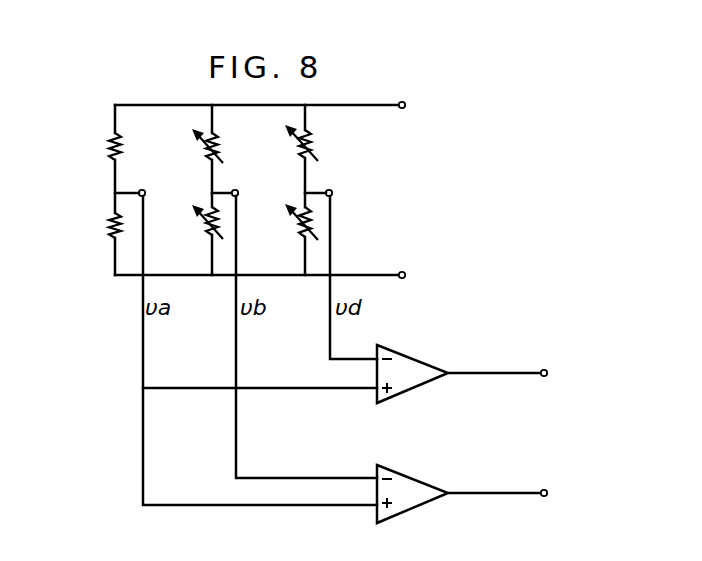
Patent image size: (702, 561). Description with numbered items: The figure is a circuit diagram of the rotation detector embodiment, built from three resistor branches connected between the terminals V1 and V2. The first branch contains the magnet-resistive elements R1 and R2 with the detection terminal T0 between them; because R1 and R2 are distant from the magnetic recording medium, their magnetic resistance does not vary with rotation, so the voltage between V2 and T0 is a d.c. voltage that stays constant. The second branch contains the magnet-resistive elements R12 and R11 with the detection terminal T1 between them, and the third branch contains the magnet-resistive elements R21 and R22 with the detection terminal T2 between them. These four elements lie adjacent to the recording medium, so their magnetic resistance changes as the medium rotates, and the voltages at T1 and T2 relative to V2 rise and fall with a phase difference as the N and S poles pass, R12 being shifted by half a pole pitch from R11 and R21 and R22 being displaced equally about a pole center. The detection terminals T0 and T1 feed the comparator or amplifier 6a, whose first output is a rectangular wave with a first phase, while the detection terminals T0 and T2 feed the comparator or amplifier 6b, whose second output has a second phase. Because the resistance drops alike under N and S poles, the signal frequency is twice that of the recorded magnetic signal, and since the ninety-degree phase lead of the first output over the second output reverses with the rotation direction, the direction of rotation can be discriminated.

The comparator or amplifier 6a is at (425, 506).
The comparator or amplifier 6b is at (405, 352).
The magnet-resistive element R1 is at (106, 147).
The magnet-resistive element R2 is at (106, 224).
The magnet-resistive element R11 is at (205, 229).
The magnet-resistive element R12 is at (200, 146).
The magnet-resistive element R21 is at (296, 146).
The magnet-resistive element R22 is at (301, 231).
The detection terminal T0 is at (145, 191).
The detection terminal T1 is at (246, 187).
The detection terminal T2 is at (340, 187).
The terminal V1 is at (405, 105).
The terminal V2 is at (405, 275).